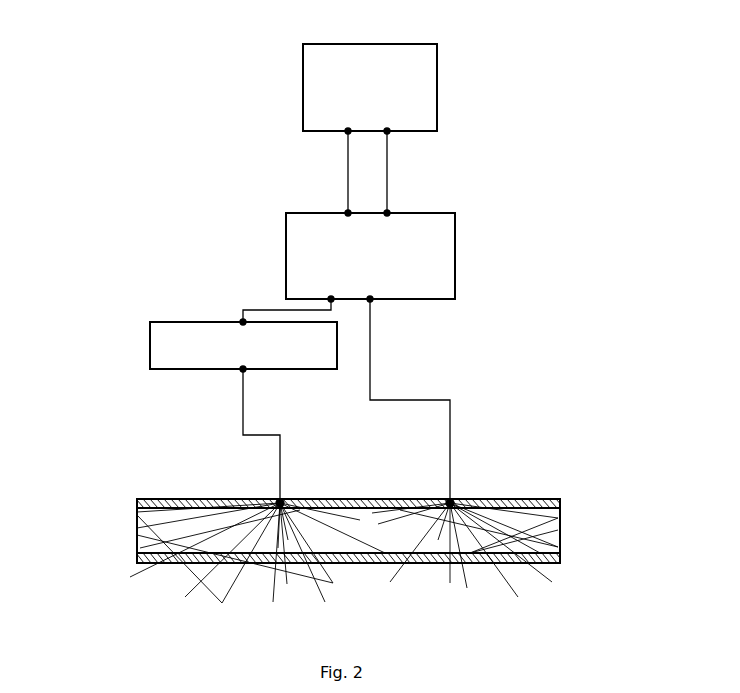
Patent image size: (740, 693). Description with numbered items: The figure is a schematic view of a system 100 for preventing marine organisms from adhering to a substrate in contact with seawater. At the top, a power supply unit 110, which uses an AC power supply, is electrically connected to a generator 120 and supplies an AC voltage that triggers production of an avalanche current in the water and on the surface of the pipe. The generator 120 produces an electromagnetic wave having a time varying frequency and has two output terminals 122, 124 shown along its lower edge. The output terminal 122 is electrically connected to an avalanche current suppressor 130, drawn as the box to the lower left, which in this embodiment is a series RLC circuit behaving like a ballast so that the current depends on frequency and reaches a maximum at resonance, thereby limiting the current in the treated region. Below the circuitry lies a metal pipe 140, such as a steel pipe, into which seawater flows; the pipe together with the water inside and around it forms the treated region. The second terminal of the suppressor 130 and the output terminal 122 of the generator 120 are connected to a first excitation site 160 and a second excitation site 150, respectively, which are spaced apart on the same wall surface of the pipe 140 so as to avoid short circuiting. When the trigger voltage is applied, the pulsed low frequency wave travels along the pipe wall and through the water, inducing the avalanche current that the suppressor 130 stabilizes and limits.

The system 100 is at (586, 318).
The power supply unit 110 is at (403, 93).
The generator 120 is at (422, 264).
The output terminal 122 is at (372, 300).
The output terminal 124 is at (328, 297).
The avalanche current suppressor 130 is at (172, 344).
The metal pipe 140 is at (548, 499).
The second excitation site 150 is at (455, 500).
The first excitation site 160 is at (275, 500).